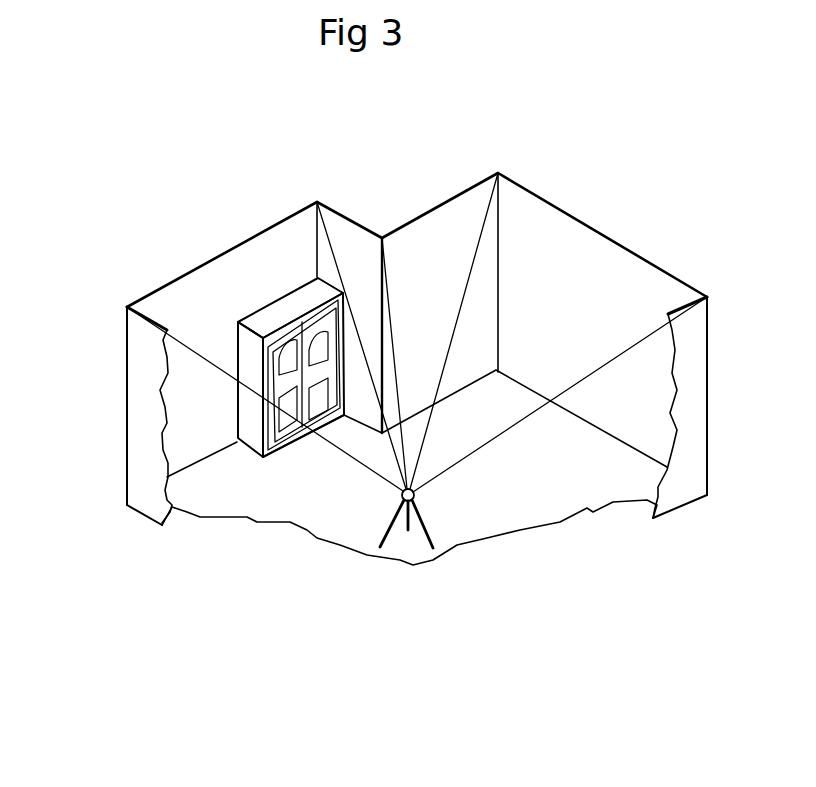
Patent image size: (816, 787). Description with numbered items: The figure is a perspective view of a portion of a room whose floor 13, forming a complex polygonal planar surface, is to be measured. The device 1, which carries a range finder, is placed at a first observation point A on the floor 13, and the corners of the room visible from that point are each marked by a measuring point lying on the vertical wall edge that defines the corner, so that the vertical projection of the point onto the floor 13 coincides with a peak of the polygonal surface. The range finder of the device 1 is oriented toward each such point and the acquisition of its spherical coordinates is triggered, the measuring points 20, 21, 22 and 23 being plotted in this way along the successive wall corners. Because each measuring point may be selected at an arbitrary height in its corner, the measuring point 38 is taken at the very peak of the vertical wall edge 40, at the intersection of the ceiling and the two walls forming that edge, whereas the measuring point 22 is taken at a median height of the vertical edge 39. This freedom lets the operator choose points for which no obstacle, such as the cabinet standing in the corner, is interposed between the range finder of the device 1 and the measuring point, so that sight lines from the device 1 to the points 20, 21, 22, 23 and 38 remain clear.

The device 1 is at (435, 508).
The floor 13 is at (502, 494).
The measuring point 20 is at (332, 221).
The measuring point 21 is at (433, 303).
The measuring point 22 is at (582, 235).
The measuring point 23 is at (704, 393).
The measuring point 38 is at (202, 353).
The vertical edge 39 is at (500, 285).
The vertical wall edge 40 is at (124, 398).